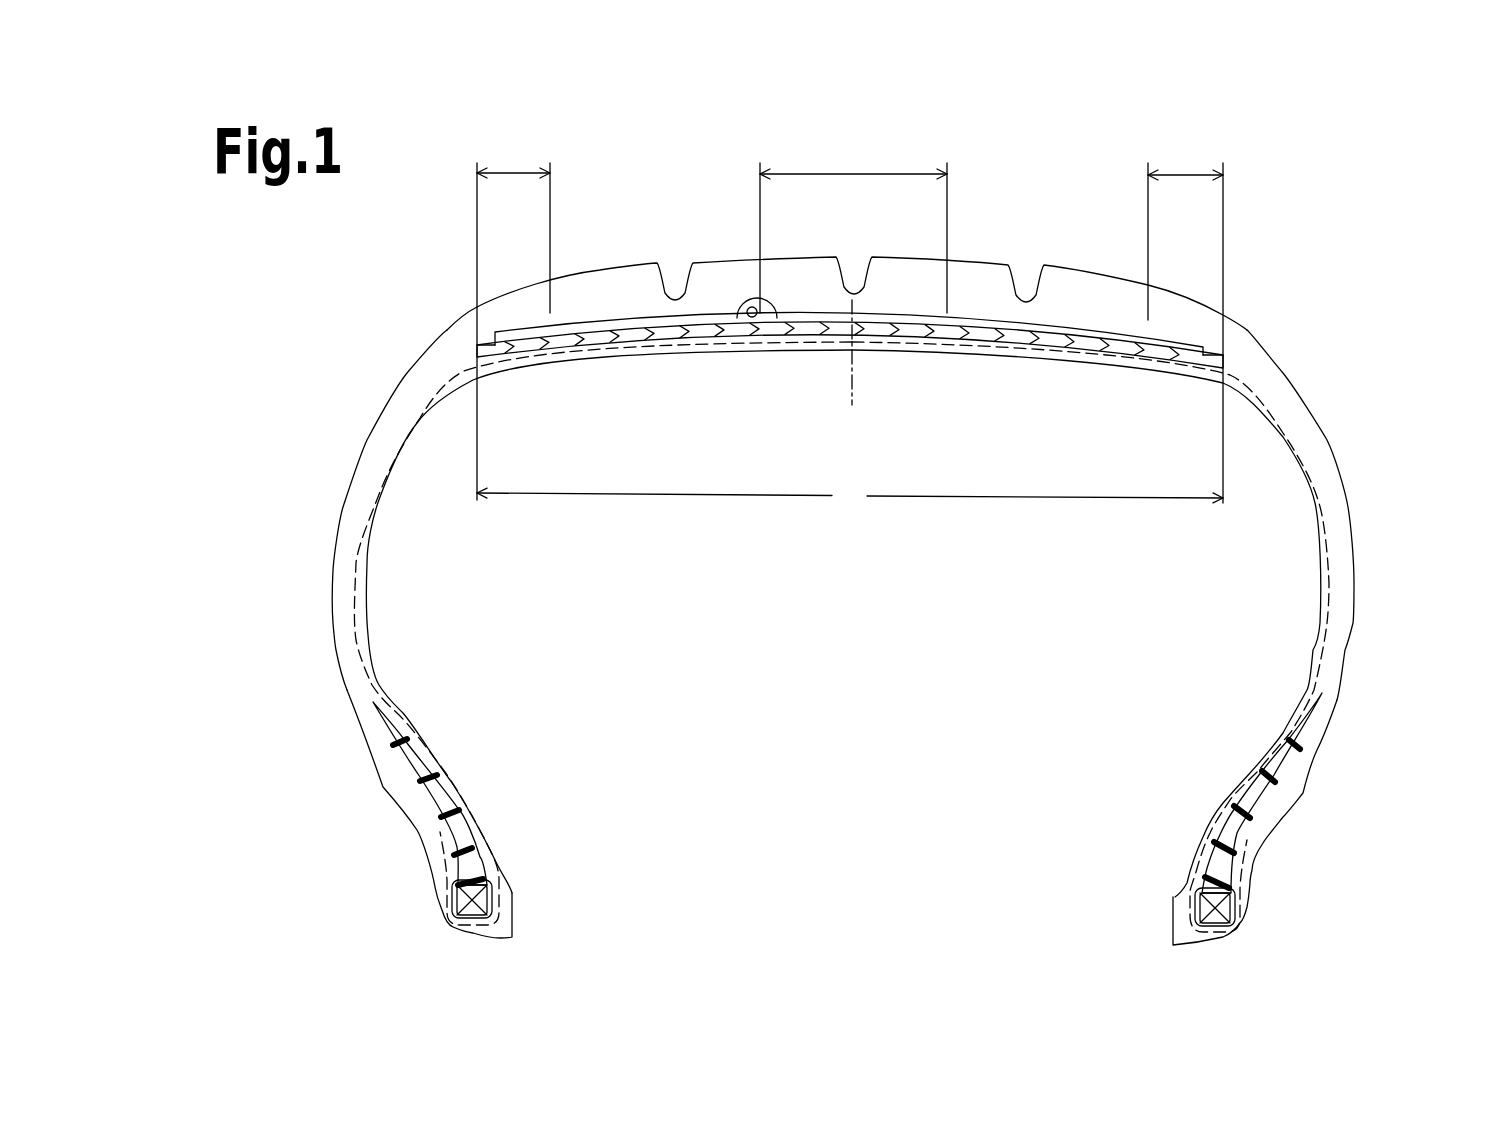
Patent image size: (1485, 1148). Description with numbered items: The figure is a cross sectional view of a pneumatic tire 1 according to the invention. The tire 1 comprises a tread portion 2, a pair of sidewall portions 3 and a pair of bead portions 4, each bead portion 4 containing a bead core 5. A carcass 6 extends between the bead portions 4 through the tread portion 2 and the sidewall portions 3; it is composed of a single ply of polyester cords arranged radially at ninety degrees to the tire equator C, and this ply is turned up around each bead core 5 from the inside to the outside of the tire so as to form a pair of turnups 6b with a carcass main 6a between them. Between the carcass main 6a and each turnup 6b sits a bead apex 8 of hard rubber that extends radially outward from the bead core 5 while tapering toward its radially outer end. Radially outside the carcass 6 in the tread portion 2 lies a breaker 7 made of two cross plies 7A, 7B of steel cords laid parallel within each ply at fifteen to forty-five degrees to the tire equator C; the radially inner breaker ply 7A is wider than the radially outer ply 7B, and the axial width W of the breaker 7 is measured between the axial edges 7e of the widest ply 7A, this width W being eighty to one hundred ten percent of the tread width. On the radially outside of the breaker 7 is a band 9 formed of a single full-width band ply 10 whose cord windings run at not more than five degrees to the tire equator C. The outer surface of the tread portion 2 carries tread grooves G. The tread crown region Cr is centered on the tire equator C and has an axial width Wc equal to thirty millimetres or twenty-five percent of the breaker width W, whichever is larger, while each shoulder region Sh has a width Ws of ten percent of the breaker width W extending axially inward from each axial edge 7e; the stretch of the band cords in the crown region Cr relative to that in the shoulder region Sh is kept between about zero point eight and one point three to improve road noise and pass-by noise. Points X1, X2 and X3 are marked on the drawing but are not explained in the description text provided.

The pneumatic tire 1 is at (1325, 400).
The tread portion 2 is at (973, 248).
The sidewall portions 3 is at (323, 603).
The bead portions 4 is at (417, 852).
The bead core 5 is at (487, 897).
The carcass 6 is at (1093, 712).
The carcass main 6a is at (1235, 783).
The turnups 6b is at (1230, 825).
The breaker 7 is at (846, 374).
The radially inner breaker ply 7A is at (1010, 438).
The radially outer breaker ply 7B is at (1000, 340).
The axial edges of the breaker 7e is at (480, 348).
The bead apex 8 is at (433, 790).
The band 9 is at (717, 358).
The band ply 10 is at (747, 318).
The tread grooves G is at (677, 292).
The shoulder region Sh is at (503, 278).
The tread crown region Cr is at (823, 248).
The tire equator C is at (852, 366).
The axial width of the breaker W is at (850, 497).
The axial width of the crown region Wc is at (853, 226).
The width of the shoulder region Ws is at (850, 321).
The point X1 is at (947, 313).
The point X2 is at (750, 320).
The point X3 is at (838, 298).